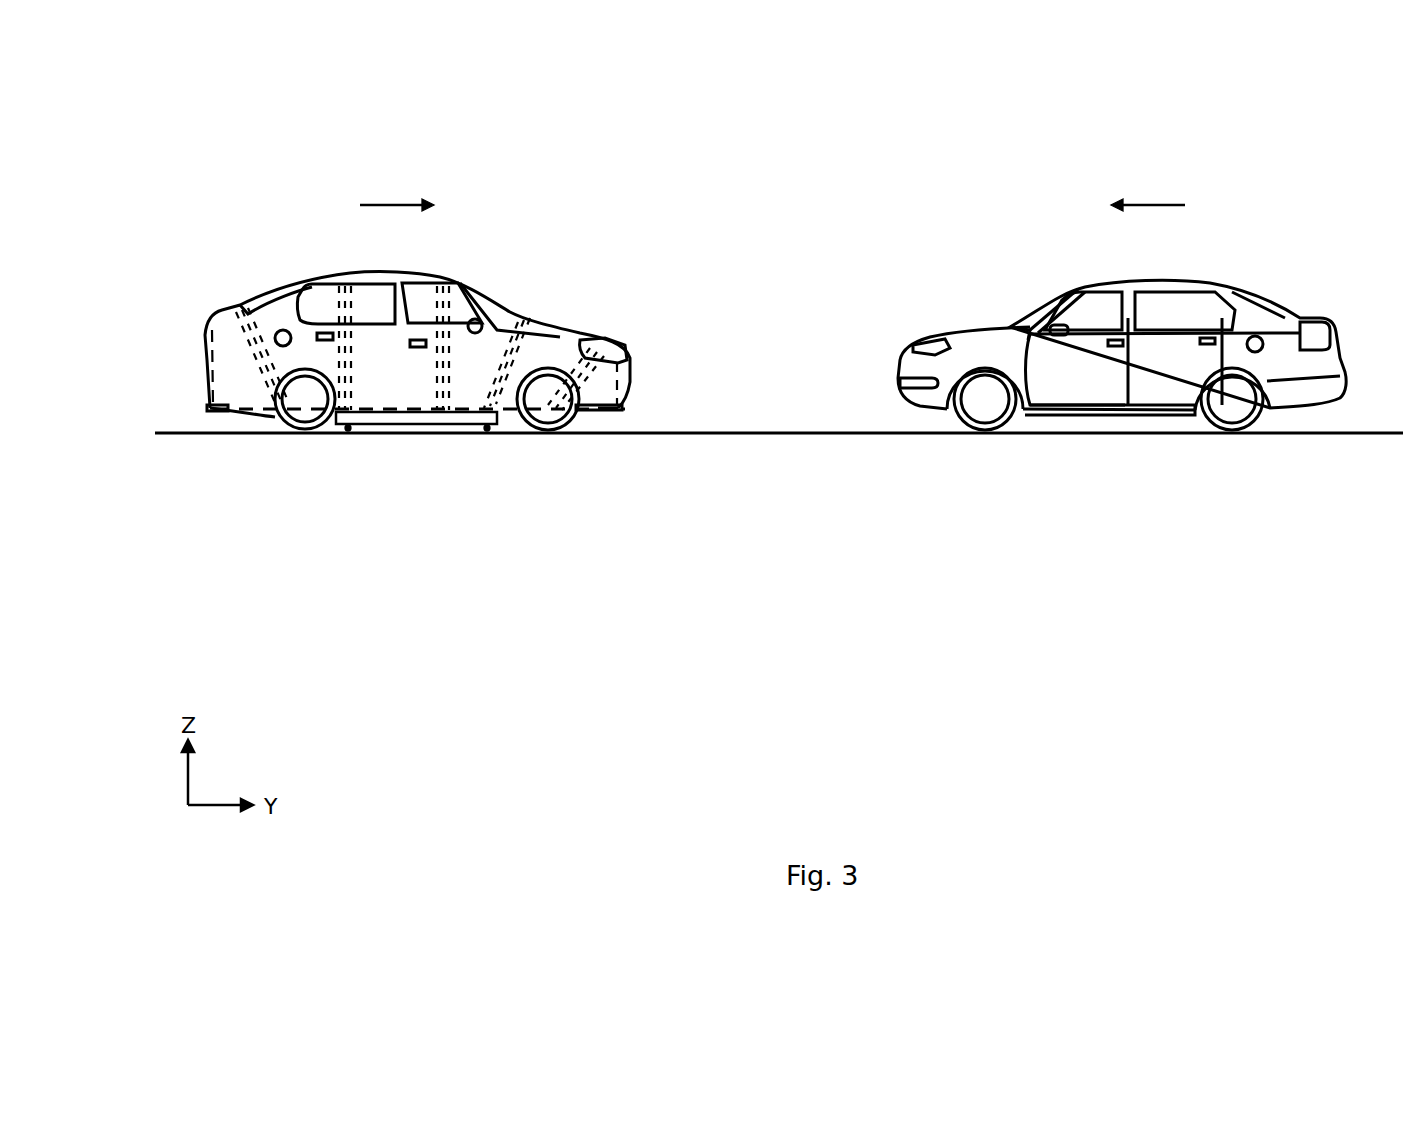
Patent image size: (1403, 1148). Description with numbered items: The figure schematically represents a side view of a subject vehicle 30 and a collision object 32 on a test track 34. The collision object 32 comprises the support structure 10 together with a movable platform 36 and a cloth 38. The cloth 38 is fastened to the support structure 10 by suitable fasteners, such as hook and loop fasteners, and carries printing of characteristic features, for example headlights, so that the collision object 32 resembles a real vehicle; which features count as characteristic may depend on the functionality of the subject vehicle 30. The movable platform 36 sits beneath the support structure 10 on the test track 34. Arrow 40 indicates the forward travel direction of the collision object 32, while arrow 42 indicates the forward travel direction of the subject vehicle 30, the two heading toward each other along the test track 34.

The support structure 10 is at (262, 266).
The subject vehicle 30 is at (1256, 180).
The collision object 32 is at (262, 176).
The test track 34 is at (797, 436).
The movable platform 36 is at (413, 421).
The cloth 38 is at (548, 346).
The arrow 40 is at (397, 189).
The arrow 42 is at (1148, 189).